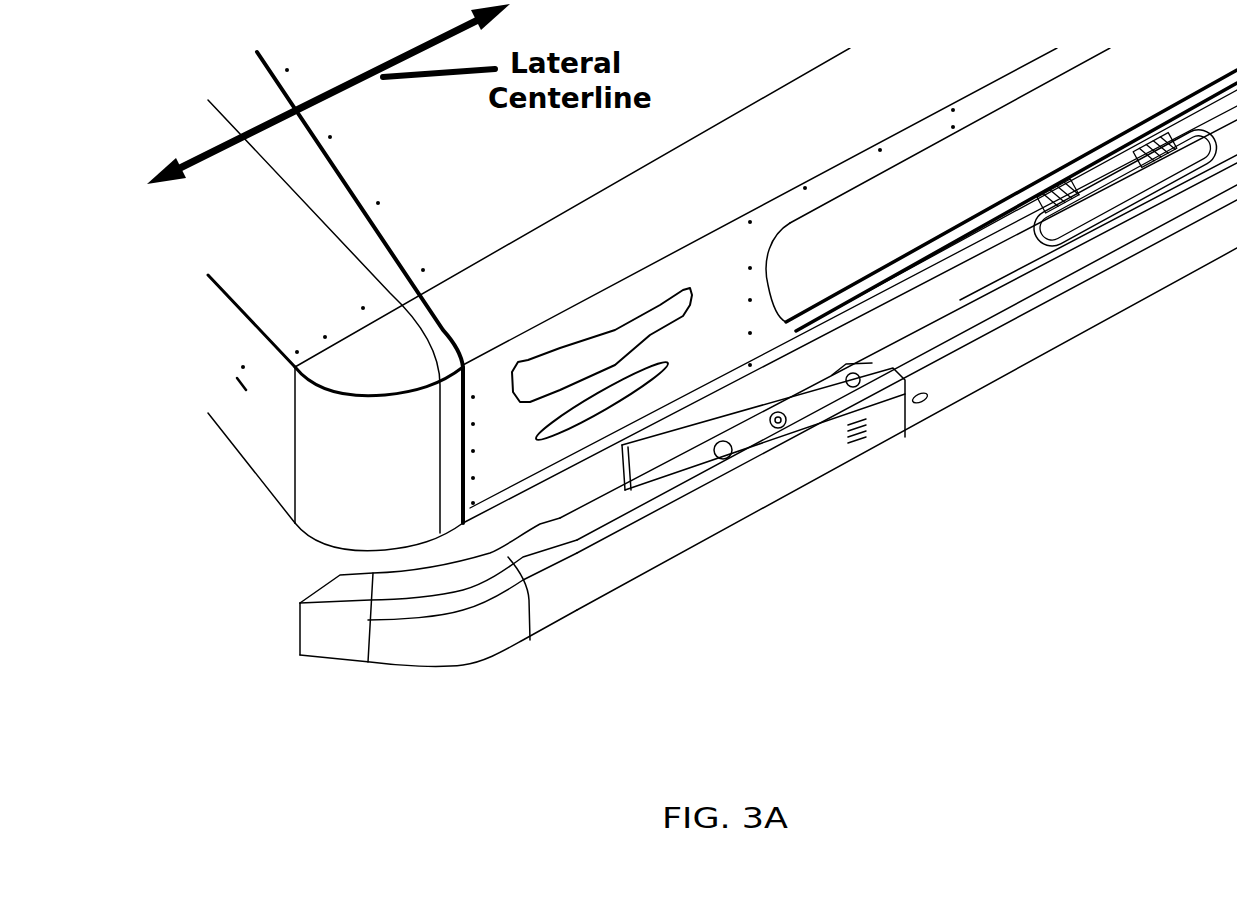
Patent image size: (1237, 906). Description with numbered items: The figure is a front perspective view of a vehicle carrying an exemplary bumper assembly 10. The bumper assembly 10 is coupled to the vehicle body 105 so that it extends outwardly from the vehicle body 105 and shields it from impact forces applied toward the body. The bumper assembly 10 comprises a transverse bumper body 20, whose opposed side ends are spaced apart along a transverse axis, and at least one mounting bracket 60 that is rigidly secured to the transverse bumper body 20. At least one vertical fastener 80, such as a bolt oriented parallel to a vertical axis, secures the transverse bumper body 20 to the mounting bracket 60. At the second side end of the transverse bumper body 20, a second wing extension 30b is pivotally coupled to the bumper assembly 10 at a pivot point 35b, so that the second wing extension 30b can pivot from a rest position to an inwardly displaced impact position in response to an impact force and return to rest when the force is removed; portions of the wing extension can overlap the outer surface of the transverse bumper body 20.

The vehicle body 105 is at (458, 173).
The bumper assembly 10 is at (280, 582).
The transverse bumper body 20 is at (963, 373).
The second wing extension 30b is at (410, 640).
The pivot point 35b is at (723, 459).
The mounting bracket 60 is at (977, 282).
The vertical fastener 80 is at (781, 427).